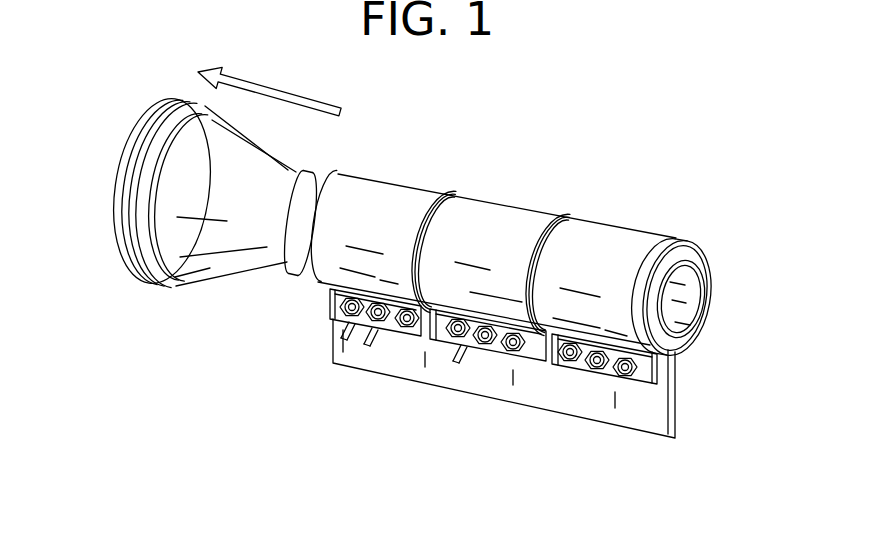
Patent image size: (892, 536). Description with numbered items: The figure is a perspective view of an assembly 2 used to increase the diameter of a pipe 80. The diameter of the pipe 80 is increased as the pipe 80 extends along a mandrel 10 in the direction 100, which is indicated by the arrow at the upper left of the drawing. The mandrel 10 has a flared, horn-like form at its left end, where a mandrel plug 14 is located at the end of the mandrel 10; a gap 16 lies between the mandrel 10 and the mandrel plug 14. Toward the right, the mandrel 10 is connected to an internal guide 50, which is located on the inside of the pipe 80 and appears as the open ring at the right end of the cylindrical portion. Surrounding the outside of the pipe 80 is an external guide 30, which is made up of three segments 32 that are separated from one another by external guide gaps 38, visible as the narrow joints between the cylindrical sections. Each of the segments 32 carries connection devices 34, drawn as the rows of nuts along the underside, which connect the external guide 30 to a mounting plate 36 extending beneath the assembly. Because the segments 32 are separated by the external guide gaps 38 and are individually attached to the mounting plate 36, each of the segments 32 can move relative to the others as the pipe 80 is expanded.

The assembly 2 is at (103, 114).
The direction 100 is at (268, 88).
The mandrel 10 is at (232, 240).
The mandrel plug 14 is at (117, 233).
The gap 16 is at (134, 279).
The external guide 30 is at (582, 242).
The segments 32 is at (370, 334).
The connection devices 34 is at (468, 348).
The mounting plate 36 is at (393, 366).
The external guide gaps 38 is at (433, 270).
The internal guide 50 is at (710, 318).
The pipe 80 is at (650, 388).